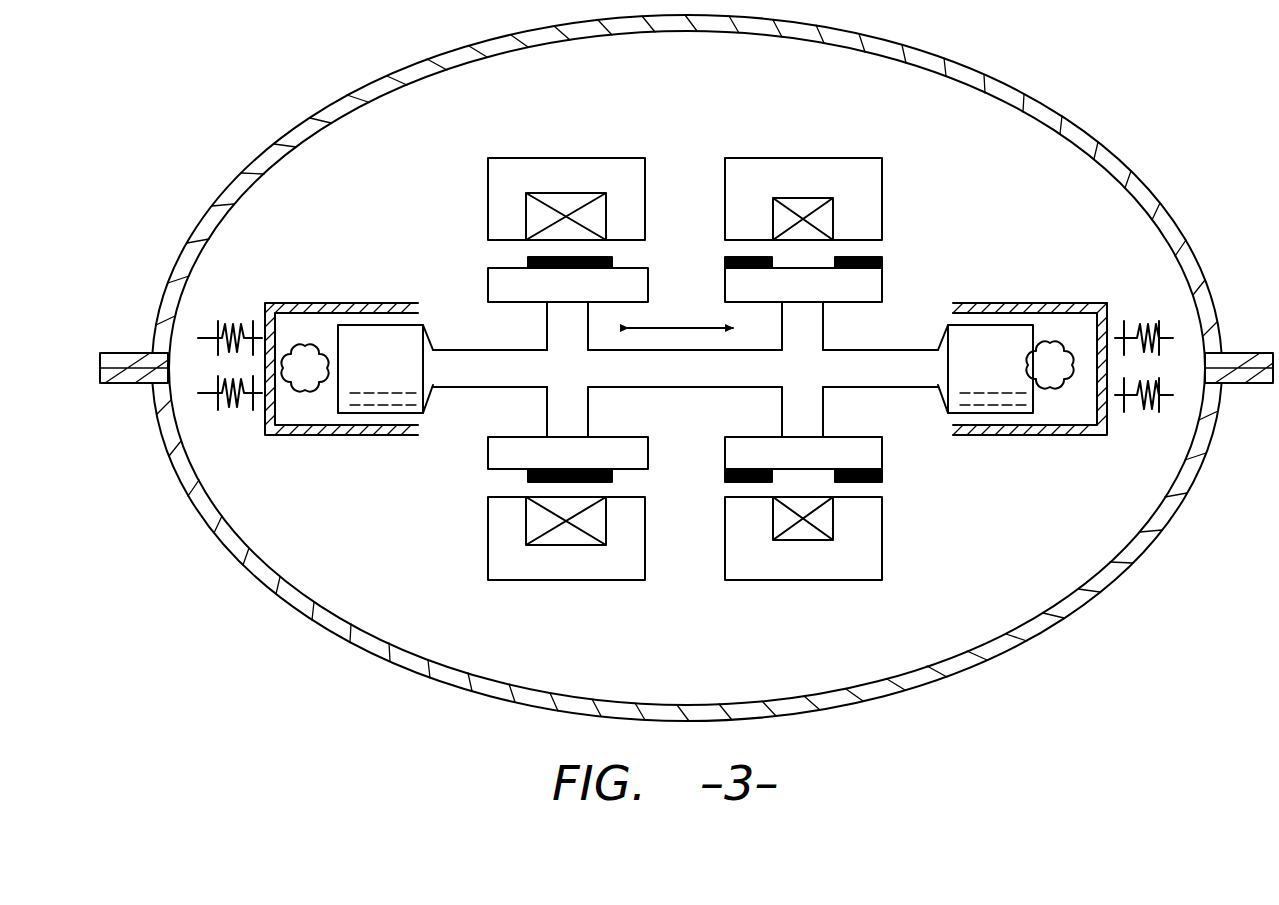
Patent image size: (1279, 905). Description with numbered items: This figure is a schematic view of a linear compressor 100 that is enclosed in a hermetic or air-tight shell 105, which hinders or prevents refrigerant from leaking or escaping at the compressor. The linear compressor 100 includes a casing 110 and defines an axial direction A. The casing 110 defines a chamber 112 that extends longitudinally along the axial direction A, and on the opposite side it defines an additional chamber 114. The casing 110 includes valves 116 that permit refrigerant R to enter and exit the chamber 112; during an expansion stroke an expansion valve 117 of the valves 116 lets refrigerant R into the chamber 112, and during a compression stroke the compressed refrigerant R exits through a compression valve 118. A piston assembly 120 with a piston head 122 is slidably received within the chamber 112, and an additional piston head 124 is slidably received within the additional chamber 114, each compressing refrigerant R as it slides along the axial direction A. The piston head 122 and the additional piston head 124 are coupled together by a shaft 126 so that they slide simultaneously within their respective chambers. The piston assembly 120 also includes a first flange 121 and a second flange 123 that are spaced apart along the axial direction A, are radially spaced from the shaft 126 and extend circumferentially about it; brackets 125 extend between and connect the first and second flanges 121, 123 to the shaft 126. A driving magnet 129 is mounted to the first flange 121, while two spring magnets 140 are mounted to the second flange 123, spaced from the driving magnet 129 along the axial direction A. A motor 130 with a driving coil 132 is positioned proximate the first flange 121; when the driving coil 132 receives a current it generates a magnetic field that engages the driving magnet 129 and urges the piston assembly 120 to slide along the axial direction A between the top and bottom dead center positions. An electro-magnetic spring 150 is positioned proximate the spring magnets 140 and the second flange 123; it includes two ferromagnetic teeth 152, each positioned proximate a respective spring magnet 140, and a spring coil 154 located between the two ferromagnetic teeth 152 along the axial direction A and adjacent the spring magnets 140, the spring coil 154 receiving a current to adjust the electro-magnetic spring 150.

The linear compressor 100 is at (242, 110).
The hermetic shell 105 is at (1062, 113).
The casing 110 is at (363, 302).
The chamber 112 is at (297, 403).
The additional chamber 114 is at (1057, 407).
The valves 116 is at (683, 348).
The expansion valve 117 is at (200, 336).
The compression valve 118 is at (200, 398).
The piston assembly 120 is at (452, 393).
The first flange 121 is at (648, 286).
The piston head 122 is at (363, 385).
The second flange 123 is at (867, 283).
The additional piston head 124 is at (995, 380).
The brackets 125 is at (560, 318).
The shaft 126 is at (622, 370).
The driving magnet 129 is at (528, 262).
The motor 130 is at (506, 150).
The driving coil 132 is at (566, 215).
The spring magnet 140 is at (724, 262).
The electro-magnetic spring 150 is at (851, 152).
The ferromagnetic tooth 152 is at (748, 228).
The spring coil 154 is at (801, 220).
The refrigerant R is at (307, 348).
The axial direction A is at (682, 328).